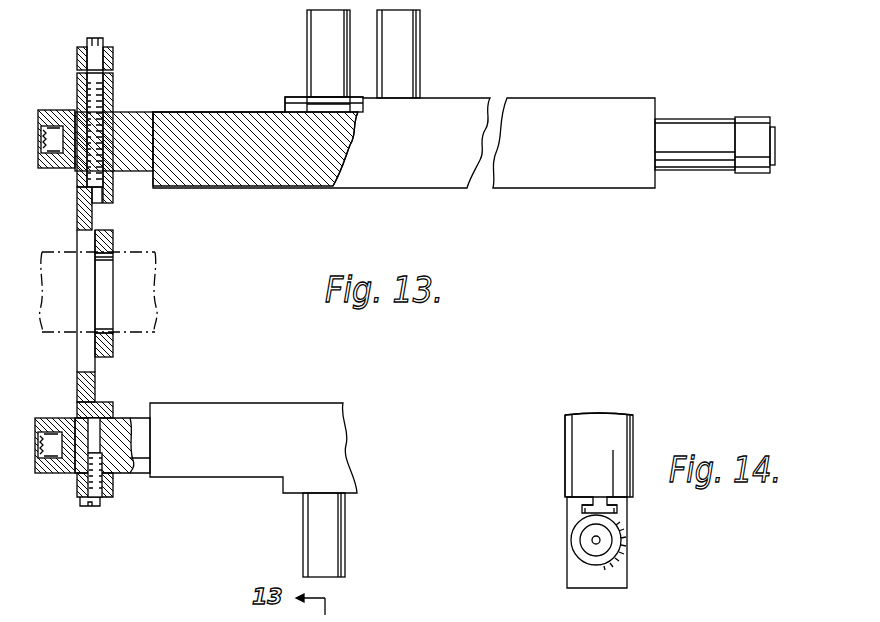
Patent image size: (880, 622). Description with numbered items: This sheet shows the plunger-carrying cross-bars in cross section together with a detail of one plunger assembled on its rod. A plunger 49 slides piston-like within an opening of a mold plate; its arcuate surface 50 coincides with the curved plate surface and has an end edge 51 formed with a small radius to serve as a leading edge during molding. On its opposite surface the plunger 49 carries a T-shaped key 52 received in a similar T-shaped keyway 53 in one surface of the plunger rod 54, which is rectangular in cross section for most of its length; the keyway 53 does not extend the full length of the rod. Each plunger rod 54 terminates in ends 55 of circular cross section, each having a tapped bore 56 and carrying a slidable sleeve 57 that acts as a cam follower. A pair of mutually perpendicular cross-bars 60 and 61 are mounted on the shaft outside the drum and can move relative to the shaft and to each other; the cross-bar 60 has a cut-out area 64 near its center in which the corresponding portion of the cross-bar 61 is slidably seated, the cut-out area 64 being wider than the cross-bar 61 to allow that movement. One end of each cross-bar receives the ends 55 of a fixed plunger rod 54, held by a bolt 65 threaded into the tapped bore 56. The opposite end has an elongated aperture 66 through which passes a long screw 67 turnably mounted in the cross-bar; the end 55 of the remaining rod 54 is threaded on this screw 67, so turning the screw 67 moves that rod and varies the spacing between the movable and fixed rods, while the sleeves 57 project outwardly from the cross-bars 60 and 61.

In FIG. 13, the plunger 49 is at (420, 45).
In FIG. 14, the plunger 49 is at (575, 452).
In FIG. 14, the arcuate surface 50 is at (598, 412).
In FIG. 14, the end edge 51 is at (572, 418).
In FIG. 13, the T-shaped key 52 is at (312, 104).
In FIG. 14, the T-shaped key 52 is at (616, 509).
In FIG. 13, the T-shaped keyway 53 is at (285, 108).
In FIG. 13, the plunger rod 54 is at (391, 180).
In FIG. 14, the plunger rod 54 is at (583, 579).
In FIG. 13, the end 55 is at (140, 172).
In FIG. 13, the tapped bore 56 is at (121, 420).
In FIG. 13, the sleeve 57 is at (50, 168).
In FIG. 14, the sleeve 57 is at (578, 549).
In FIG. 13, the cross-bar 60 is at (77, 222).
In FIG. 13, the cross-bar 61 is at (113, 235).
In FIG. 13, the cut-out area 64 is at (95, 388).
In FIG. 13, the bolt 65 is at (100, 507).
In FIG. 13, the elongated aperture 66 is at (80, 100).
In FIG. 13, the screw 67 is at (112, 100).